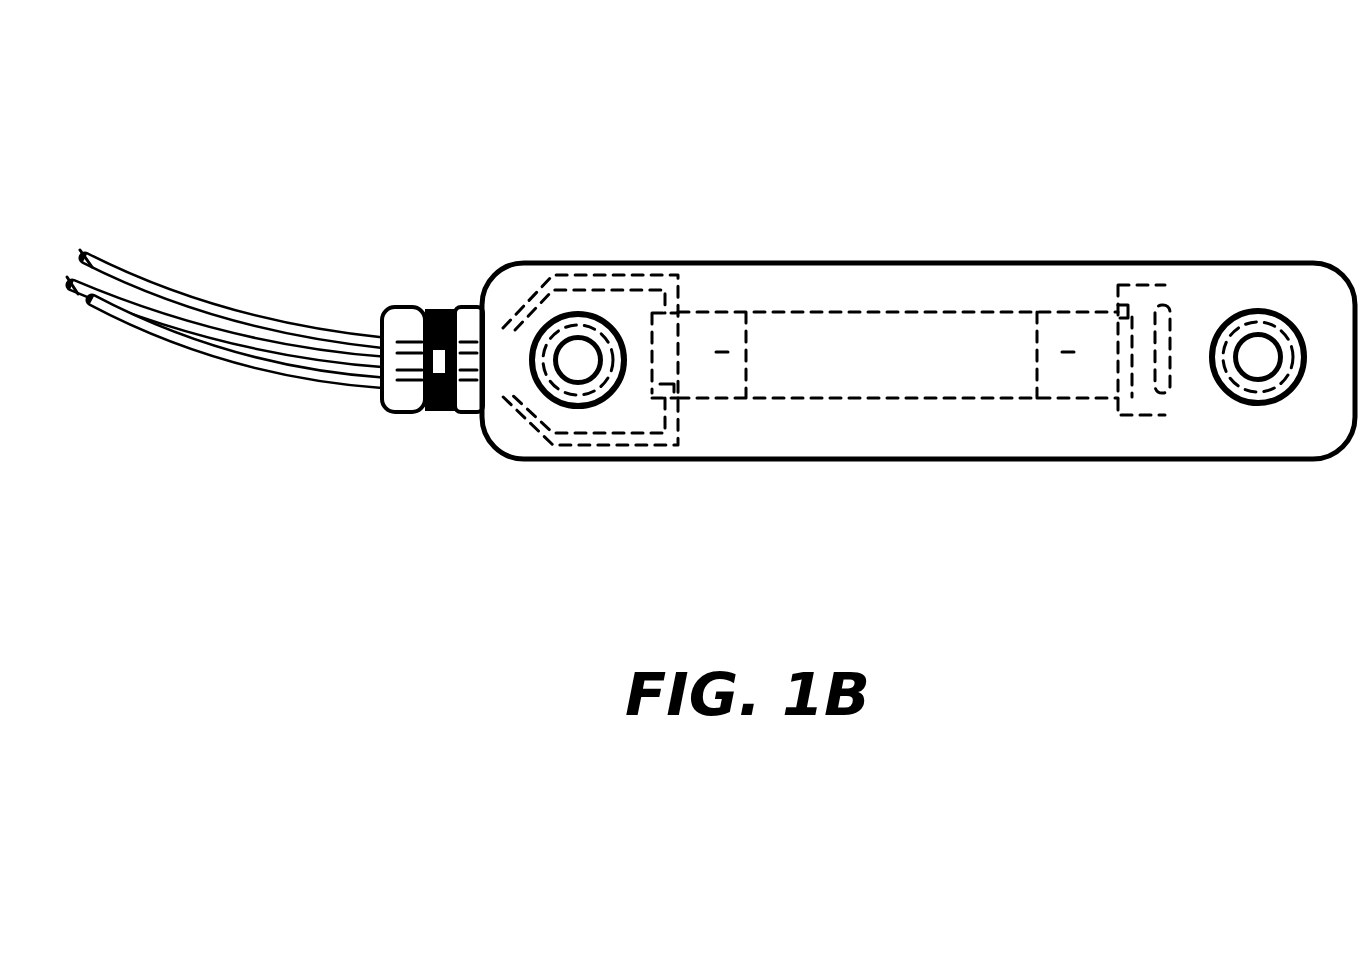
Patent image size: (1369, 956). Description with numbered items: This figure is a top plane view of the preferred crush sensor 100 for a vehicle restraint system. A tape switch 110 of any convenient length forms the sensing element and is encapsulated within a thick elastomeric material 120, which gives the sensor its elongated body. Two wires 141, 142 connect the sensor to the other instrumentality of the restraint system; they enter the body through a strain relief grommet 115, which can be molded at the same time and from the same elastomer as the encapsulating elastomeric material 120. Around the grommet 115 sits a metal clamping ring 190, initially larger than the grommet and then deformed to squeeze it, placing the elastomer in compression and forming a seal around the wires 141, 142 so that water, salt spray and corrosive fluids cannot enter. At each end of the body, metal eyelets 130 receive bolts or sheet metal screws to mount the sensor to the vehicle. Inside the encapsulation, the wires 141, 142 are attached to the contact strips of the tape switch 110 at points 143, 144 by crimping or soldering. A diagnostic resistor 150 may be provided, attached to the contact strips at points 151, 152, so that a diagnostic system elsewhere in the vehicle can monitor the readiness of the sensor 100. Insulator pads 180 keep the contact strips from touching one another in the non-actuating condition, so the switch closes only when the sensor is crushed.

The crush sensor 100 is at (896, 262).
The tape switch 110 is at (993, 330).
The strain relief grommet 115 is at (385, 387).
The elastomeric material 120 is at (752, 288).
The eyelets 130 is at (573, 322).
The wire 141 is at (207, 320).
The wire 142 is at (227, 357).
The wire attachment point 143 is at (667, 387).
The wire attachment point 144 is at (673, 335).
The diagnostic resistor 150 is at (1165, 372).
The resistor attachment point 151 is at (1115, 382).
The resistor attachment point 152 is at (1120, 312).
The insulator pads 180 is at (722, 357).
The metal clamping ring 190 is at (437, 412).